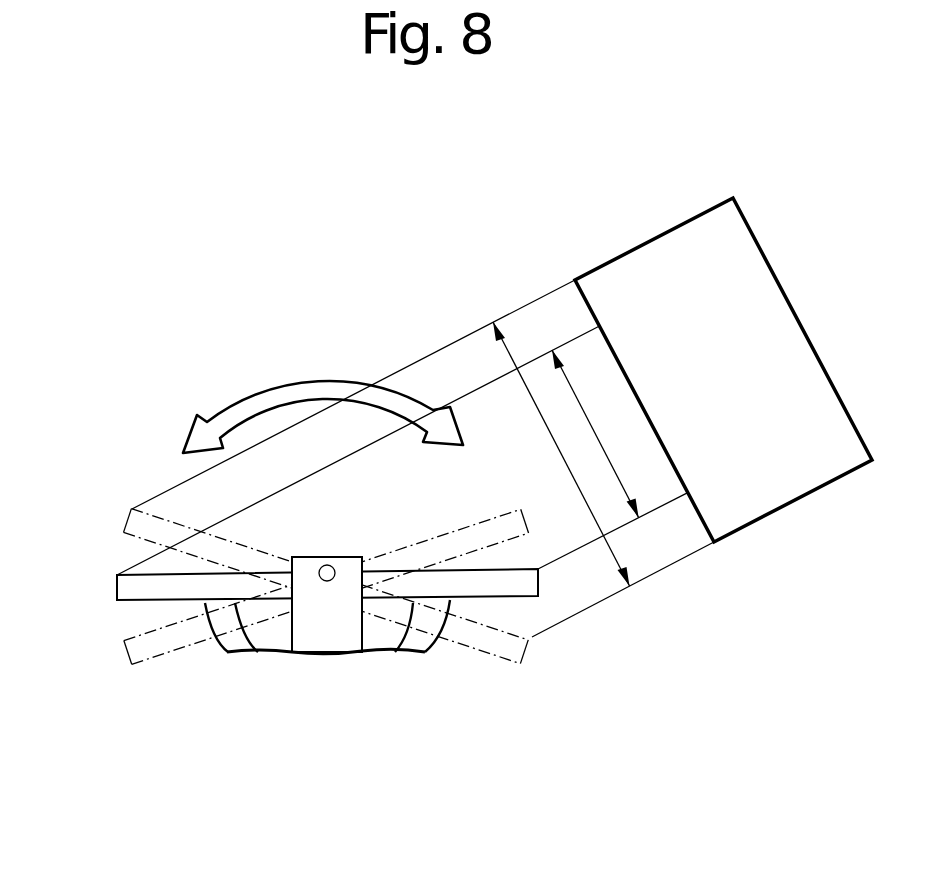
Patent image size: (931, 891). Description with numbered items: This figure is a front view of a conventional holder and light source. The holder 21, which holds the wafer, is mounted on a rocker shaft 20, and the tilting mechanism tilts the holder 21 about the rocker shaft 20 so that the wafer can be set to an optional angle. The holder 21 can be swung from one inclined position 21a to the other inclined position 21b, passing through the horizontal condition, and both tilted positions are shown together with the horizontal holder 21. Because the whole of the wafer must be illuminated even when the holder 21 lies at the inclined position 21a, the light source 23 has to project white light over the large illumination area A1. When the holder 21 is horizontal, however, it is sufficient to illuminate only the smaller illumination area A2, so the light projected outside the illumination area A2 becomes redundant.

The rocker shaft 20 is at (327, 581).
The holder 21 is at (127, 587).
The inclined position 21a is at (130, 515).
The inclined position 21b is at (183, 653).
The light source 23 is at (797, 312).
The illumination area A1 is at (567, 465).
The illumination area A2 is at (587, 410).